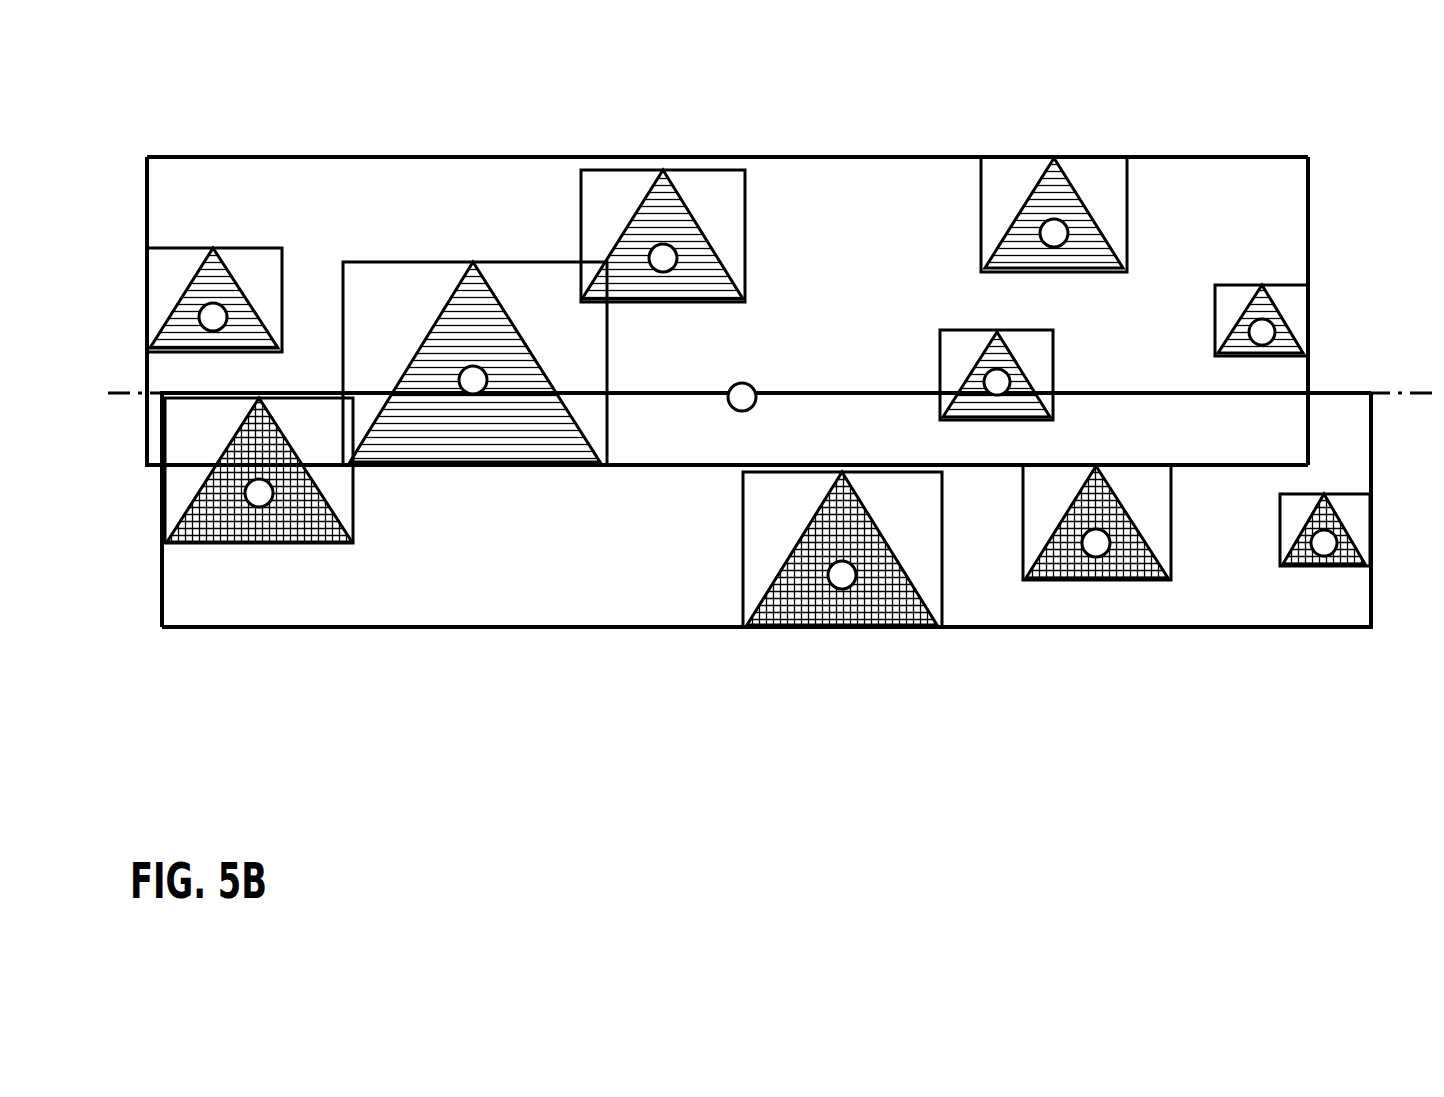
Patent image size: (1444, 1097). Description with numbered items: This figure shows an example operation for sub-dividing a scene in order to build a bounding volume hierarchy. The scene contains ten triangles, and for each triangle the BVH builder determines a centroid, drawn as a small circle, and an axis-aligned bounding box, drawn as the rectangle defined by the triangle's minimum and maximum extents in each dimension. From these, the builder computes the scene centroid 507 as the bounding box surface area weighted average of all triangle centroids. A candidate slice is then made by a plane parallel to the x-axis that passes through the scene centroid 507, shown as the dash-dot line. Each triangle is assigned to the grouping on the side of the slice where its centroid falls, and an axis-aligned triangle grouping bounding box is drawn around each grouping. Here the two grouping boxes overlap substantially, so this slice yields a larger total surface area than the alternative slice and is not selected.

The scene centroid 507 is at (747, 385).